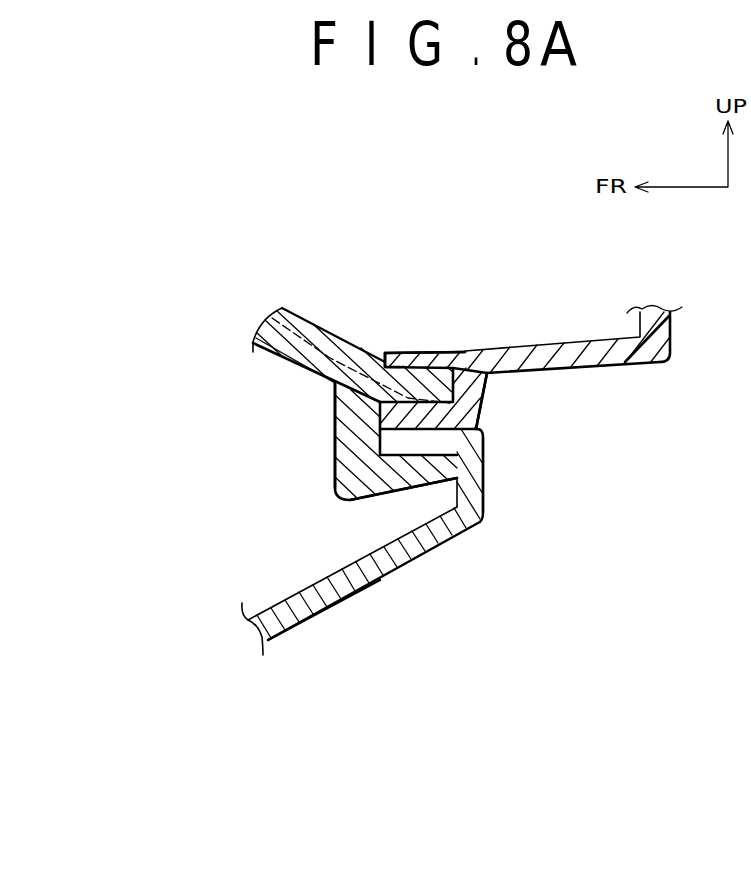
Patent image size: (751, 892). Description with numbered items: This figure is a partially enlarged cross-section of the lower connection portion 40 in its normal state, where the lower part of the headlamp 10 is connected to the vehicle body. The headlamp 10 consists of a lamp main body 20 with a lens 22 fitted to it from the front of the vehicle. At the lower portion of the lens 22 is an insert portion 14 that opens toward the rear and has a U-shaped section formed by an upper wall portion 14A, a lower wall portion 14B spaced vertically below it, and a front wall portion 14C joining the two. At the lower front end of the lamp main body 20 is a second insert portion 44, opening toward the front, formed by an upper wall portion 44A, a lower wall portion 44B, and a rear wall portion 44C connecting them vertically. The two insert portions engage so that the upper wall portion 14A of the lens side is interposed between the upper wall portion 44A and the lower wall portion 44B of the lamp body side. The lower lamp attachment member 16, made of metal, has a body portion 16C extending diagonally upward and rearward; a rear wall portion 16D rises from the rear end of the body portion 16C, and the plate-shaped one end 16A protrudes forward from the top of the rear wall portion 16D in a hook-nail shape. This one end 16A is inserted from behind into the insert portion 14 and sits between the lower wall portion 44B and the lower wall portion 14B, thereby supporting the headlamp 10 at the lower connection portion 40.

The headlamp 10 is at (260, 393).
The insert portion 14 is at (292, 496).
The upper wall portion 14A is at (467, 350).
The lower wall portion 14B is at (403, 492).
The front wall portion 14C is at (337, 448).
The lower lamp attachment member 16 is at (263, 606).
The one end 16A is at (350, 436).
The body portion 16C is at (337, 603).
The rear wall portion 16D is at (486, 466).
The lamp main body 20 is at (645, 362).
The lens 22 is at (313, 324).
The lower connection portion 40 is at (440, 589).
The insert portion 44 is at (498, 298).
The upper wall portion 44A is at (420, 350).
The lower wall portion 44B is at (378, 360).
The rear wall portion 44C is at (482, 403).